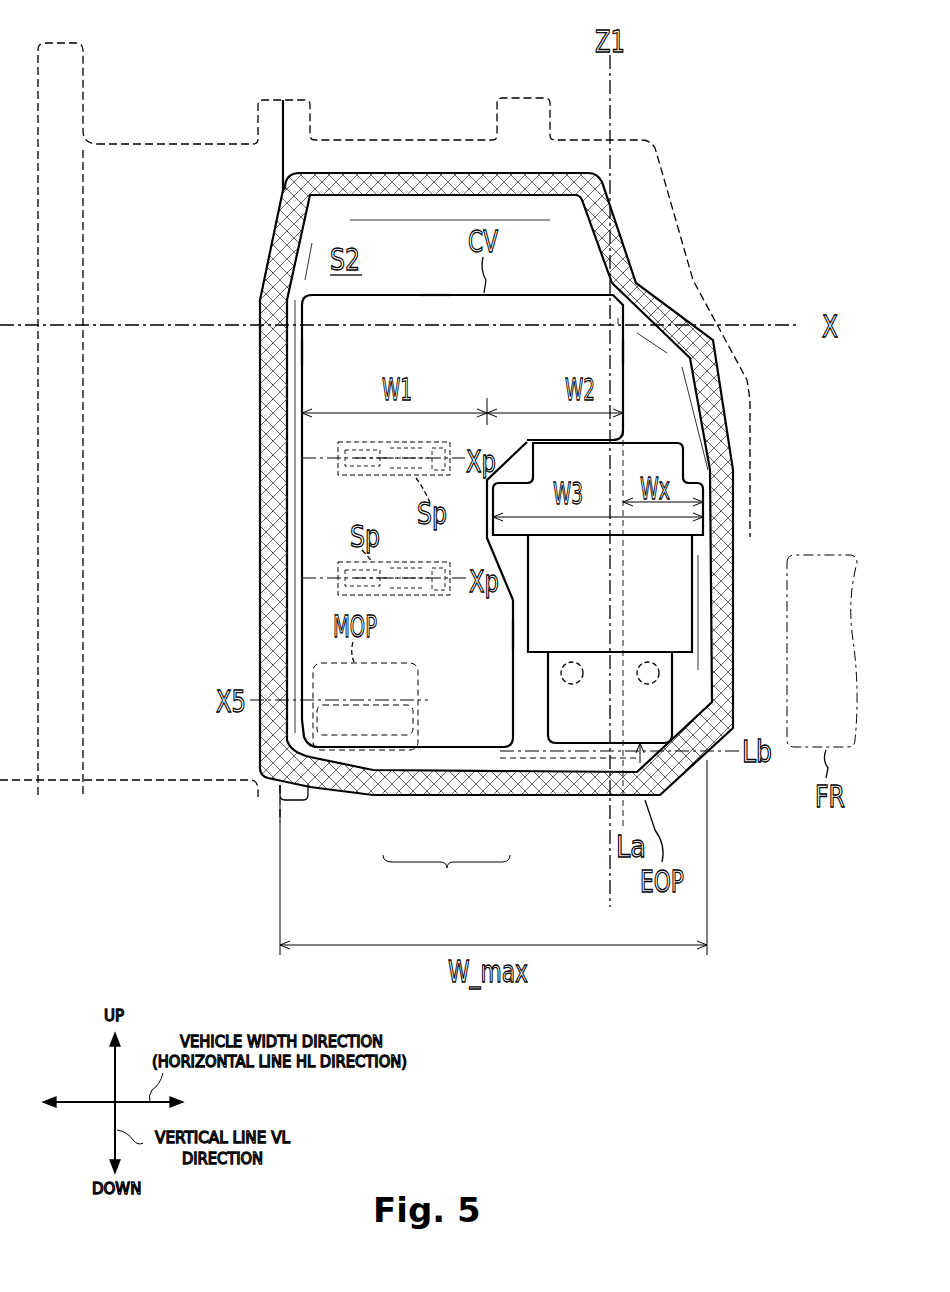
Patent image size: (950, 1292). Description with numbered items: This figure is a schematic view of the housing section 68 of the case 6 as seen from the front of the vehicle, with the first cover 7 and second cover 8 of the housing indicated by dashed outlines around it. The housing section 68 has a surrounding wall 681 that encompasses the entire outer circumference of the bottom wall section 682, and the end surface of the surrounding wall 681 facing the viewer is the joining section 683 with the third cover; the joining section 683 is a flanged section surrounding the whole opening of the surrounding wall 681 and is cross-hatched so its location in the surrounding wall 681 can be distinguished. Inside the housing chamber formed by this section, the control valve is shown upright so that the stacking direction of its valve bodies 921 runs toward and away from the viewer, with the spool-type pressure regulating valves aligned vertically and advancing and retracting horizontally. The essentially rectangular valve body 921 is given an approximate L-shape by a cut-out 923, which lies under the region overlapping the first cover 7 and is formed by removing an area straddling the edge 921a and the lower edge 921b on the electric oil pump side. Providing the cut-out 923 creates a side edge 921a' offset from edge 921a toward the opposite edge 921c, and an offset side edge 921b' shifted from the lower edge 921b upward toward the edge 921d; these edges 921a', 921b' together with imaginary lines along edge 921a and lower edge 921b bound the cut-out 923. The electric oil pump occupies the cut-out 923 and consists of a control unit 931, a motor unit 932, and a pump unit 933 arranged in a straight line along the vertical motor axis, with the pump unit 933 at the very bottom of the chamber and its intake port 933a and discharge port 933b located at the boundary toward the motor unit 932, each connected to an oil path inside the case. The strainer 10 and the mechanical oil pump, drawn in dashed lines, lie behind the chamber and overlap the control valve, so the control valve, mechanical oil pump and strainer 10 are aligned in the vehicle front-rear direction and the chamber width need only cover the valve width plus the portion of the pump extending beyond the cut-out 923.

The case 6 is at (375, 138).
The first cover 7 is at (662, 163).
The second cover 8 is at (124, 141).
The strainer 10 is at (265, 746).
The housing section 68 is at (446, 882).
The surrounding wall 681 is at (440, 796).
The bottom wall section 682 is at (510, 796).
The joining section 683 is at (560, 783).
The valve body 921 is at (540, 300).
The edge 921a is at (569, 353).
The side edge 921a' is at (475, 629).
The lower edge 921b is at (471, 721).
The offset side edge 921b' is at (544, 406).
The edge 921c is at (304, 352).
The edge 921d is at (436, 297).
The cut-out 923 is at (497, 545).
The control unit 931 is at (688, 460).
The motor unit 932 is at (712, 575).
The pump unit 933 is at (655, 697).
The intake port 933a is at (570, 662).
The discharge port 933b is at (648, 662).